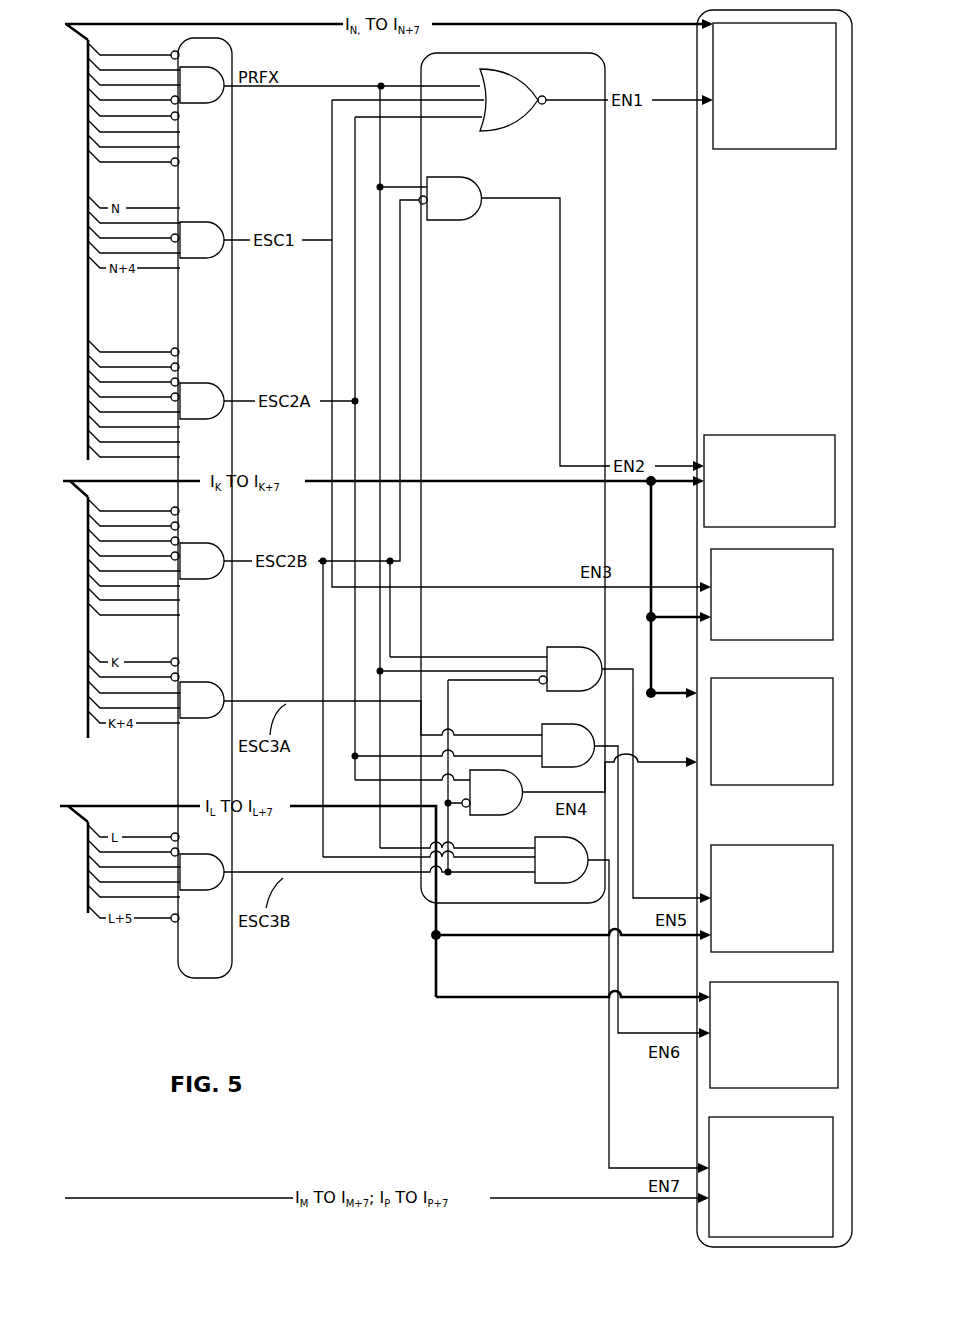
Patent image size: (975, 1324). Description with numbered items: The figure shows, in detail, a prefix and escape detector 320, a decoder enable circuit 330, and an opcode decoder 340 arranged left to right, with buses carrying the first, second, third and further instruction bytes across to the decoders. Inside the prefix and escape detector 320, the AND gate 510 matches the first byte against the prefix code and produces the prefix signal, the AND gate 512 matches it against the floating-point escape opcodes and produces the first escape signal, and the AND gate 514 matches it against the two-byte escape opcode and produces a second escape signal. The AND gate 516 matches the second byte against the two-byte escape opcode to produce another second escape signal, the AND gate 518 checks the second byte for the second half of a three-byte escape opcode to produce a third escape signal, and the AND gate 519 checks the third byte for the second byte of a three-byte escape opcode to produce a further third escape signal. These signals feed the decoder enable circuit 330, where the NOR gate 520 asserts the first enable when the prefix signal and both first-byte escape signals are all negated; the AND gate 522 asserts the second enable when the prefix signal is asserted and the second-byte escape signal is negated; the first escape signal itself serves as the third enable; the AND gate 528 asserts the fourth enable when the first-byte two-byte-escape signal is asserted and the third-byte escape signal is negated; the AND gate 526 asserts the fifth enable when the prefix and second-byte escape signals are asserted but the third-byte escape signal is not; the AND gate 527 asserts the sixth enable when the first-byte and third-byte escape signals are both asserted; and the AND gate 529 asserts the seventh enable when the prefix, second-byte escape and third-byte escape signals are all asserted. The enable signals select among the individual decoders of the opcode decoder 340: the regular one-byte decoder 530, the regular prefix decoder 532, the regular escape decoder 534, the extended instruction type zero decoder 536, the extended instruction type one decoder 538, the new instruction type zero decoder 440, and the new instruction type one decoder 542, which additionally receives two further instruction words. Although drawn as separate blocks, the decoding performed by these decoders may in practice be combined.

The prefix and escape detector 320 is at (222, 978).
The decoder enable circuit 330 is at (421, 890).
The opcode decoder 340 is at (697, 1147).
The AND gate 510 is at (202, 85).
The AND gate 512 is at (202, 240).
The AND gate 514 is at (202, 401).
The AND gate 516 is at (202, 561).
The AND gate 518 is at (202, 700).
The AND gate 519 is at (202, 872).
The NOR gate 520 is at (484, 132).
The AND gate 522 is at (450, 198).
The AND gate 526 is at (570, 669).
The AND gate 527 is at (568, 745).
The AND gate 528 is at (492, 792).
The AND gate 529 is at (561, 860).
The regular one-byte decoder 530 is at (774, 86).
The regular prefix decoder 532 is at (769, 481).
The regular escape decoder 534 is at (772, 594).
The extended instruction type 0 decoder 536 is at (772, 731).
The extended instruction type 1 decoder 538 is at (772, 898).
The new instruction type 0 decoder 440 is at (774, 1036).
The new instruction type 1 decoder 542 is at (771, 1177).